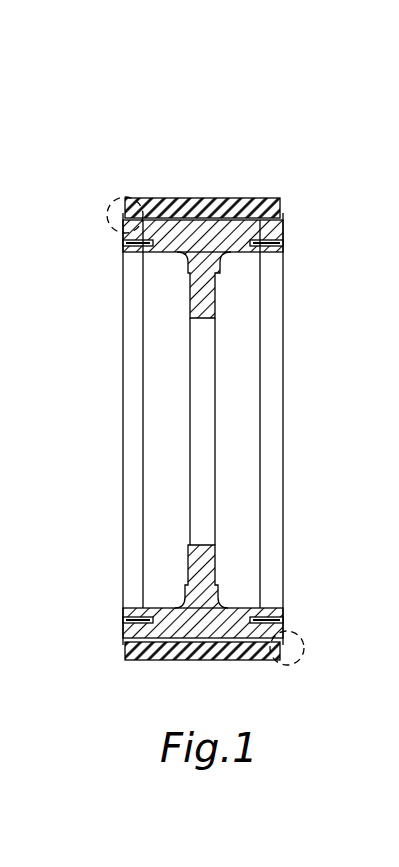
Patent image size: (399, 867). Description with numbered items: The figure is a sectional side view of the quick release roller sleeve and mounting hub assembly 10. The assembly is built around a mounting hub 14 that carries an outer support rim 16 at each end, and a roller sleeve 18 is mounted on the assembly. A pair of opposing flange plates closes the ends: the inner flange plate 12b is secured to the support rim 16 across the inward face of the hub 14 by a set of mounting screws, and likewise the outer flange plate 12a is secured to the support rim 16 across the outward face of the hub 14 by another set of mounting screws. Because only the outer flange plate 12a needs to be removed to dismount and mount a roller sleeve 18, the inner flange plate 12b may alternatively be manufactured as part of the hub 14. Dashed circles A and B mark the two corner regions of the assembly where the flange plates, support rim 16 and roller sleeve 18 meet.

The quick release roller sleeve and mounting hub assembly 10 is at (170, 162).
The outer flange plate 12a is at (270, 397).
The inner flange plate 12b is at (130, 418).
The mounting hub 14 is at (218, 505).
The outer support rim 16 is at (215, 257).
The roller sleeve 18 is at (230, 208).
The detail A is at (111, 203).
The detail B is at (282, 664).